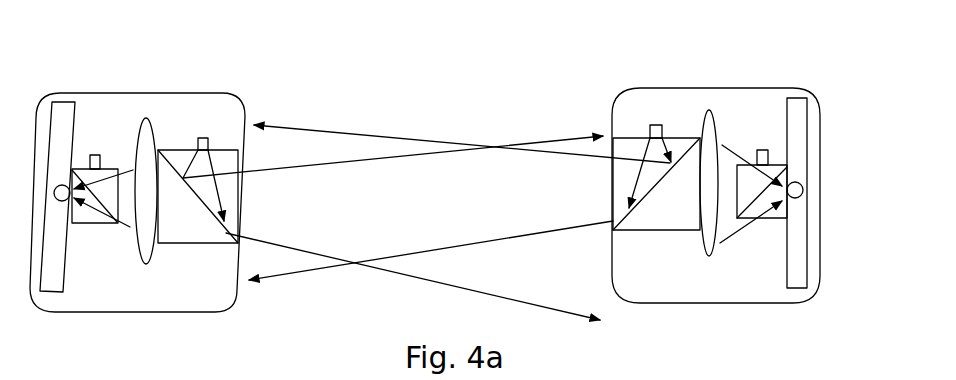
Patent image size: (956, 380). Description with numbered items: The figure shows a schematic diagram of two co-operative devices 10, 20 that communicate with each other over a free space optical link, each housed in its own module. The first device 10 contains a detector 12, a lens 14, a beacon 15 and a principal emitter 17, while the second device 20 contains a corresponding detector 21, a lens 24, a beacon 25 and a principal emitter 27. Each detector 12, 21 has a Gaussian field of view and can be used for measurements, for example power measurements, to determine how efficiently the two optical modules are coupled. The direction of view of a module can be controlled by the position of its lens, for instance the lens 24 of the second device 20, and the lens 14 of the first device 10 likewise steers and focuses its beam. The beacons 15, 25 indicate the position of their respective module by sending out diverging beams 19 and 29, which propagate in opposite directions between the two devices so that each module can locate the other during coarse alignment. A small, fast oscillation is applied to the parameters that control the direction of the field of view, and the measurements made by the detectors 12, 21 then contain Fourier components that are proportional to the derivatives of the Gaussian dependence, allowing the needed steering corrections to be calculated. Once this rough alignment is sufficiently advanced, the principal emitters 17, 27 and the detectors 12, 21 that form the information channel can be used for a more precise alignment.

The device 10 is at (82, 290).
The detector 12 is at (63, 203).
The lens 14 is at (140, 266).
The beacon 15 is at (200, 138).
The principal emitter 17 is at (97, 154).
The beam 19 is at (547, 138).
The device 20 is at (747, 292).
The detector 21 is at (793, 205).
The lens 24 is at (712, 256).
The beacon 25 is at (655, 125).
The principal emitter 27 is at (762, 150).
The beam 29 is at (298, 275).